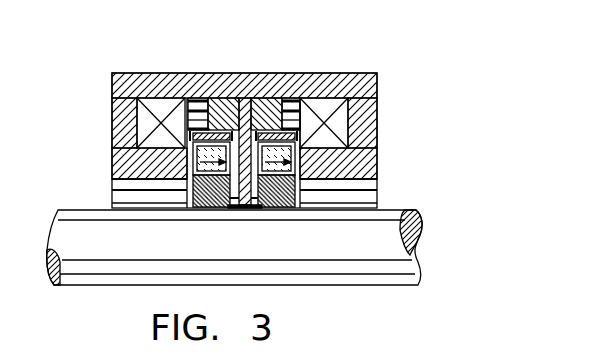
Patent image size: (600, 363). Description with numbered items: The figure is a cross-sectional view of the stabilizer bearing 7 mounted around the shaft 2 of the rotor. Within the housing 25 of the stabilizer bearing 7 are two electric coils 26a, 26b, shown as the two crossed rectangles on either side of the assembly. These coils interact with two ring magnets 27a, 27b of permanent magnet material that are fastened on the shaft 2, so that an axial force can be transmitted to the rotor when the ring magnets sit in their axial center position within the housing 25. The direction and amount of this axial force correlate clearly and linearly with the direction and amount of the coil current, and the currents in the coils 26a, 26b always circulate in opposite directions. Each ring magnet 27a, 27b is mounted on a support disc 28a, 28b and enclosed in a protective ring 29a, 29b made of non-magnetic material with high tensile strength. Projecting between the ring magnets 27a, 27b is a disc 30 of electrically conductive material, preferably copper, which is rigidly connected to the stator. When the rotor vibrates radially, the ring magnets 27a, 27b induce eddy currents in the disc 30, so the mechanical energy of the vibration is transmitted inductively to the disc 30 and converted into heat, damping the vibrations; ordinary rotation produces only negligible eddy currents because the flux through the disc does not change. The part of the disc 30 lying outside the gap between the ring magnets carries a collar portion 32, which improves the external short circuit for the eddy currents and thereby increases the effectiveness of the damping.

The shaft 2 is at (80, 223).
The stabilizer bearing 7 is at (252, 120).
The housing 25 is at (125, 112).
The electric coil 26a is at (165, 108).
The electric coil 26b is at (329, 107).
The ring magnet 27a is at (194, 173).
The ring magnet 27b is at (297, 170).
The support disc 28a is at (204, 200).
The support disc 28b is at (274, 200).
The protective ring 29a is at (190, 113).
The protective ring 29b is at (256, 128).
The disc 30 is at (238, 132).
The collar portion 32 is at (262, 136).